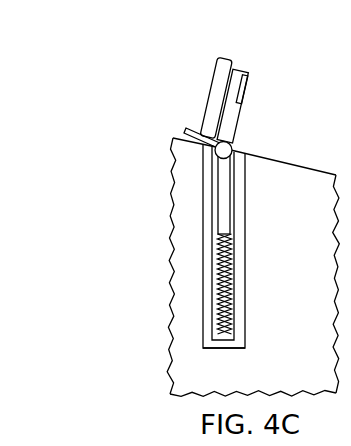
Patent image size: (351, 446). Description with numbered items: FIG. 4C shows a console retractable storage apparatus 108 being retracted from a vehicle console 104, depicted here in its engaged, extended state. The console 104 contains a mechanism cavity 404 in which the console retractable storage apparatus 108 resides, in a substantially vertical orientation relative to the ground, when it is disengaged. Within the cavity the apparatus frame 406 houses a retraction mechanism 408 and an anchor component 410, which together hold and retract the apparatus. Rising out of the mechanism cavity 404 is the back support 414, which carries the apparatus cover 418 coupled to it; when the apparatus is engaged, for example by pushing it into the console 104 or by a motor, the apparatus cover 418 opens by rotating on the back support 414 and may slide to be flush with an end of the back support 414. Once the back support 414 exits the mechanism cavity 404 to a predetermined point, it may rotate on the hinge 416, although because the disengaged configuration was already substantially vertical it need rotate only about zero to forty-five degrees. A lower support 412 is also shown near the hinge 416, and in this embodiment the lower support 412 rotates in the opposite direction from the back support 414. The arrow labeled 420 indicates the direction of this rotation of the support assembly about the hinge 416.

The console 104 is at (209, 250).
The console retractable storage apparatus 108 is at (197, 351).
The mechanism cavity 404 is at (222, 348).
The apparatus frame 406 is at (235, 270).
The retraction mechanism 408 is at (228, 318).
The anchor component 410 is at (230, 197).
The lower support 412 is at (188, 128).
The back support 414 is at (234, 69).
The hinge 416 is at (232, 152).
The apparatus cover 418 is at (221, 57).
The rotation direction 420 is at (278, 116).